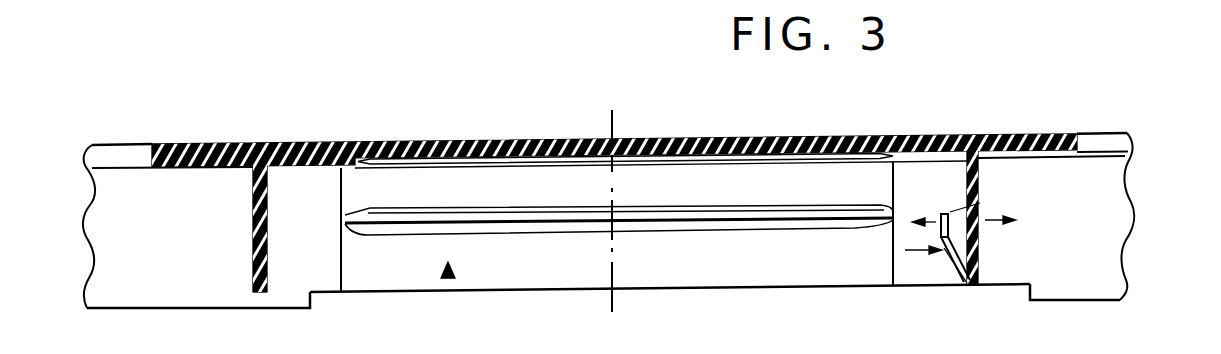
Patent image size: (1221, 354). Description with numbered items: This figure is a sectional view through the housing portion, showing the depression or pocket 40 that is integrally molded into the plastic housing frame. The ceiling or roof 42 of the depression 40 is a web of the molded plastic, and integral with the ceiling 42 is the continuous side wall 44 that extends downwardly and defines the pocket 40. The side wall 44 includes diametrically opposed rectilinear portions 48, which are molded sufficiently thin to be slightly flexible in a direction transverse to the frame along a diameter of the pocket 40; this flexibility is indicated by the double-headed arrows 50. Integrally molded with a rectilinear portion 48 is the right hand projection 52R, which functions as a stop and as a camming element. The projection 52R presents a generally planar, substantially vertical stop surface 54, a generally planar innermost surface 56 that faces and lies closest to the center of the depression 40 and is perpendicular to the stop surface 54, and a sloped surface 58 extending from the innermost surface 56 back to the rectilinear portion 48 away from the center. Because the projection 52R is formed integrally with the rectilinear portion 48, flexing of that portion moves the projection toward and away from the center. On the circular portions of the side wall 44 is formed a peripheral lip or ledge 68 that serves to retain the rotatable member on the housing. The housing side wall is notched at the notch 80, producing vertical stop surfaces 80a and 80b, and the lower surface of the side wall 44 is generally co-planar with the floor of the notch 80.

The depression or pocket 40 is at (448, 278).
The ceiling or roof 42 is at (704, 147).
The side wall 44 is at (995, 178).
The rectilinear portions 48 is at (980, 203).
The double-headed arrows 50 is at (985, 220).
The right hand projection 52R is at (905, 250).
The stop surface 54 is at (980, 233).
The innermost surface 56 is at (946, 214).
The sloped surface 58 is at (958, 257).
The peripheral lip or ledge 68 is at (652, 217).
The notch 80 is at (686, 287).
The vertical stop surface 80a is at (1030, 297).
The vertical stop surface 80b is at (316, 301).